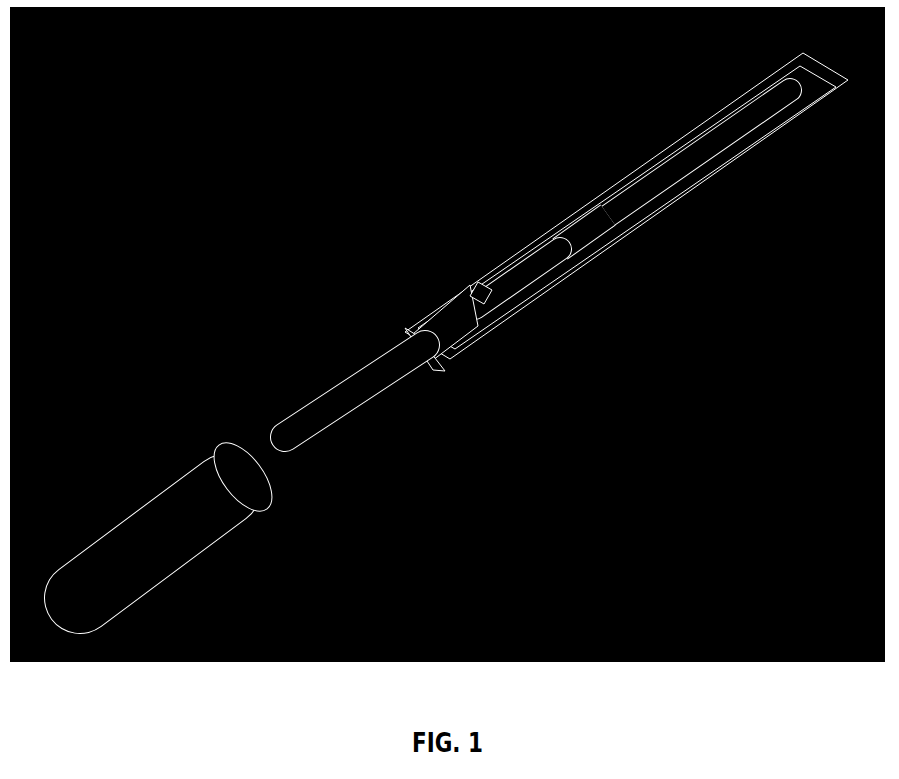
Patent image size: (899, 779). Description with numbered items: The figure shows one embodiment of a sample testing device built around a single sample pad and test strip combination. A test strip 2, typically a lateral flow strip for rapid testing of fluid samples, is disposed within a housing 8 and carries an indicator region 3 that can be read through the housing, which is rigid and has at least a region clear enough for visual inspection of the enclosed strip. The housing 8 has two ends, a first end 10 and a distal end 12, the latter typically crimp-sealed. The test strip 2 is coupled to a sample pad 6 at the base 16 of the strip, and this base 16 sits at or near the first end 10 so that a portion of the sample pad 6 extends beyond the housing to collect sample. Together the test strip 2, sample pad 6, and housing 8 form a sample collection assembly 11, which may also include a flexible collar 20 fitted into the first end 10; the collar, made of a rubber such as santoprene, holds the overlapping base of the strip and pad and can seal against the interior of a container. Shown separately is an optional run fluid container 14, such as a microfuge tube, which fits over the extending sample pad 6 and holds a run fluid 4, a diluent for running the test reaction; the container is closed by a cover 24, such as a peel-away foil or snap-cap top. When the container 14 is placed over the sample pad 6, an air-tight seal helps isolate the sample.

The test strip 2 is at (640, 198).
The indicator region 3 is at (593, 253).
The run fluid 4 is at (154, 550).
The sample pad 6 is at (350, 374).
The housing 8 is at (592, 197).
The end 10 is at (450, 297).
The sample collection assembly 11 is at (523, 305).
The end 12 is at (782, 63).
The run fluid container 14 is at (173, 478).
The base 16 is at (485, 293).
The flexible collar 20 is at (440, 330).
The cover 24 is at (272, 487).